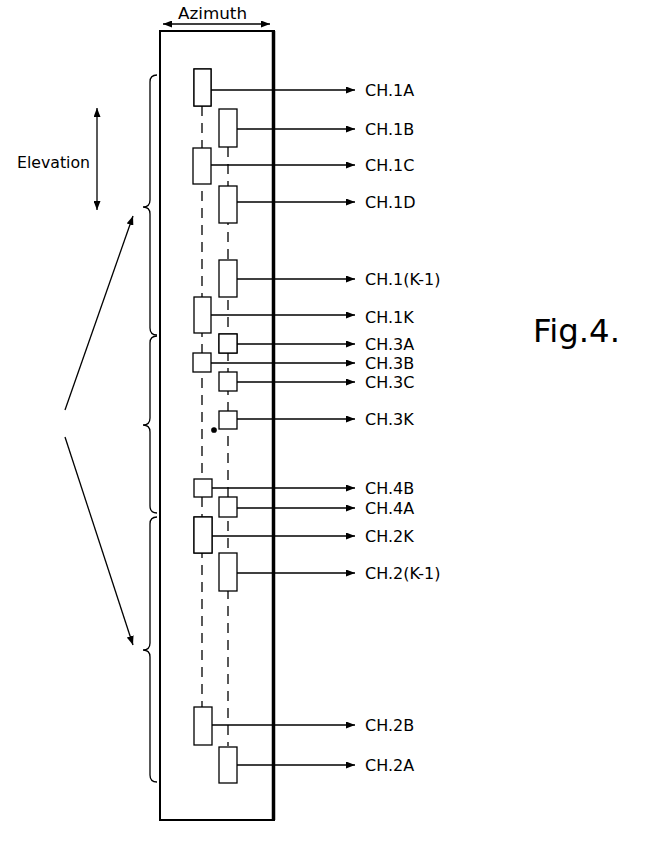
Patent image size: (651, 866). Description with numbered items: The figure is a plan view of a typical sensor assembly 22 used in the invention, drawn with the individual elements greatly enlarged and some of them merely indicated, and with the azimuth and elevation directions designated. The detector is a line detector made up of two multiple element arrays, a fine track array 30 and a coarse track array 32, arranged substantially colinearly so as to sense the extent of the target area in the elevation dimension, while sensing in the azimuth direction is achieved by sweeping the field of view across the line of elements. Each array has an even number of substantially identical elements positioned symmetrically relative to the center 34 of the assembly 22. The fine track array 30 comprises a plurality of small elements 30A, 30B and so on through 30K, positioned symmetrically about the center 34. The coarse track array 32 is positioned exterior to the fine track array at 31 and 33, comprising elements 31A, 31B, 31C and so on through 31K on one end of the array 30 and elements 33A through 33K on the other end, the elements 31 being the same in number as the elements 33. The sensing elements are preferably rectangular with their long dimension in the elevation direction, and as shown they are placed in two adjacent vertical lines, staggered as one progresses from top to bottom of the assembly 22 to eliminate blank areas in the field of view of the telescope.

The sensor assembly 22 is at (283, 52).
The coarse track array elements 31 is at (142, 173).
The coarse track array element 31A is at (198, 85).
The coarse track array element 31B is at (224, 127).
The coarse track array element 31C is at (205, 168).
The coarse track array element 31K is at (223, 277).
The fine track array 30 is at (142, 402).
The fine track array element 30A is at (221, 343).
The fine track array element 30B is at (200, 360).
The fine track array element 30K is at (227, 417).
The center of the assembly 34 is at (213, 432).
The coarse track array 32 is at (91, 430).
The coarse track array elements 33 is at (143, 692).
The coarse track array element 33K is at (205, 540).
The coarse track array element 33A is at (233, 757).